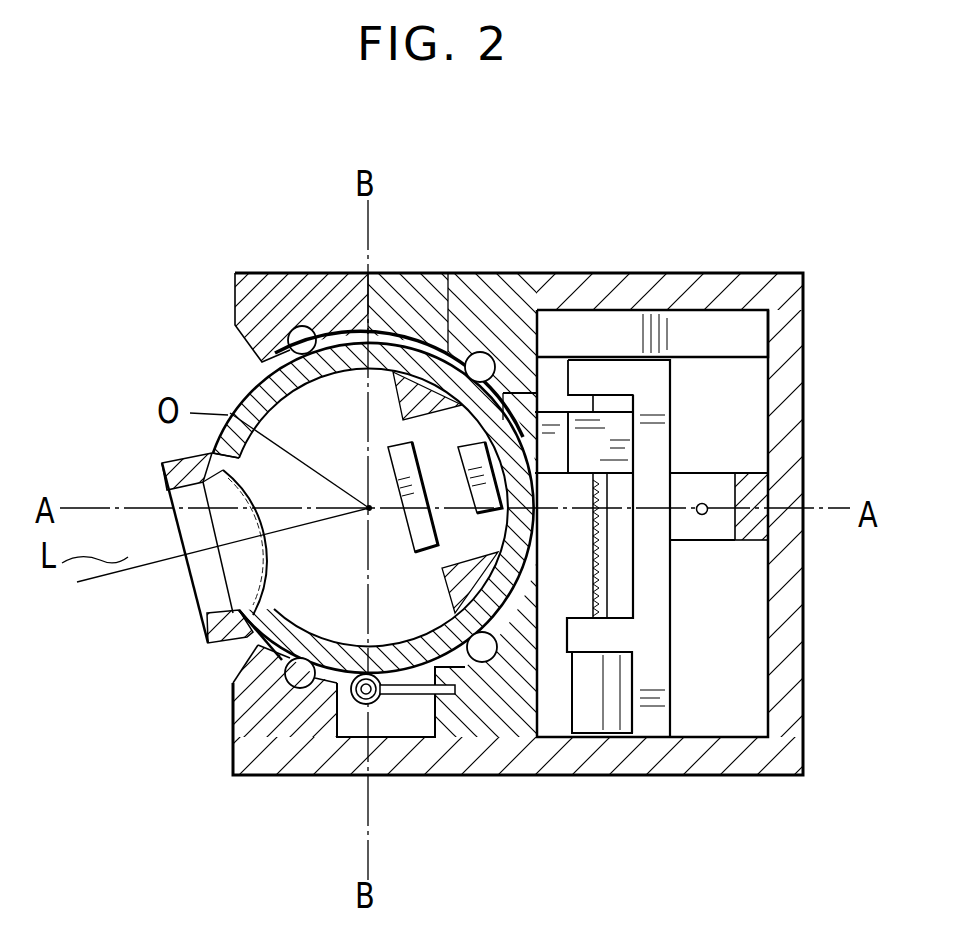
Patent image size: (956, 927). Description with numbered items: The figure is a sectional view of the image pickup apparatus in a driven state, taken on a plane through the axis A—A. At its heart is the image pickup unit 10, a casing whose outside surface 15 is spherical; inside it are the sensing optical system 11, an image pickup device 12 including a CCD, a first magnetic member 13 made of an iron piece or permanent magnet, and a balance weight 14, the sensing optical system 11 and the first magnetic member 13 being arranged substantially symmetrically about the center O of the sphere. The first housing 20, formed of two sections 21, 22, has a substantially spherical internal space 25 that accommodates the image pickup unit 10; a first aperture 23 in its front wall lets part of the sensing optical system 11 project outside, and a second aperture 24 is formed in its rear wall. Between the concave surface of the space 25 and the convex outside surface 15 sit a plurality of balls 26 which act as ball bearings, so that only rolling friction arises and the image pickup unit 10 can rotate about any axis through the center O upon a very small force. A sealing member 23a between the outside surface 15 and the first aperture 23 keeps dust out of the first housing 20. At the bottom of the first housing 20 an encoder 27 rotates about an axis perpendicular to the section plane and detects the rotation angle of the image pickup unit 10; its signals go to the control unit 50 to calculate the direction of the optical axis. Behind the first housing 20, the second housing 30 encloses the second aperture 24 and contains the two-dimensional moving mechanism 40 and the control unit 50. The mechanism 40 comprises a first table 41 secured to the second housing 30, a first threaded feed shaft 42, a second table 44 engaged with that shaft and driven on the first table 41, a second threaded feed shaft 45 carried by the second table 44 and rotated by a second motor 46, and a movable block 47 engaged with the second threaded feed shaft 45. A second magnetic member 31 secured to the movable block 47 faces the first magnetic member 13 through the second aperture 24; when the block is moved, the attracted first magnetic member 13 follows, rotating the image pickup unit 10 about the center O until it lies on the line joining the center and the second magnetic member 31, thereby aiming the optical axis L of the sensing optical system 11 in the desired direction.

The image pickup unit 10 is at (180, 582).
The sensing optical system 11 is at (230, 568).
The image pickup device 12 is at (403, 475).
The first magnetic member 13 is at (440, 400).
The balance weight 14 is at (463, 660).
The outside surface 15 is at (242, 390).
The first housing 20 is at (316, 272).
The section 21 is at (272, 270).
The section 22 is at (503, 273).
The first aperture 23 is at (232, 652).
The sealing member 23a is at (262, 367).
The second aperture 24 is at (540, 360).
The internal space 25 is at (403, 332).
The balls 26 is at (243, 725).
The encoder 27 is at (362, 702).
The second housing 30 is at (683, 272).
The second magnetic member 31 is at (555, 437).
The two-dimensional moving mechanism 40 is at (672, 668).
The first table 41 is at (752, 488).
The first threaded feed shaft 42 is at (703, 515).
The second table 44 is at (647, 723).
The second threaded feed shaft 45 is at (635, 575).
The second motor 46 is at (597, 723).
The movable block 47 is at (613, 448).
The control unit 50 is at (755, 330).